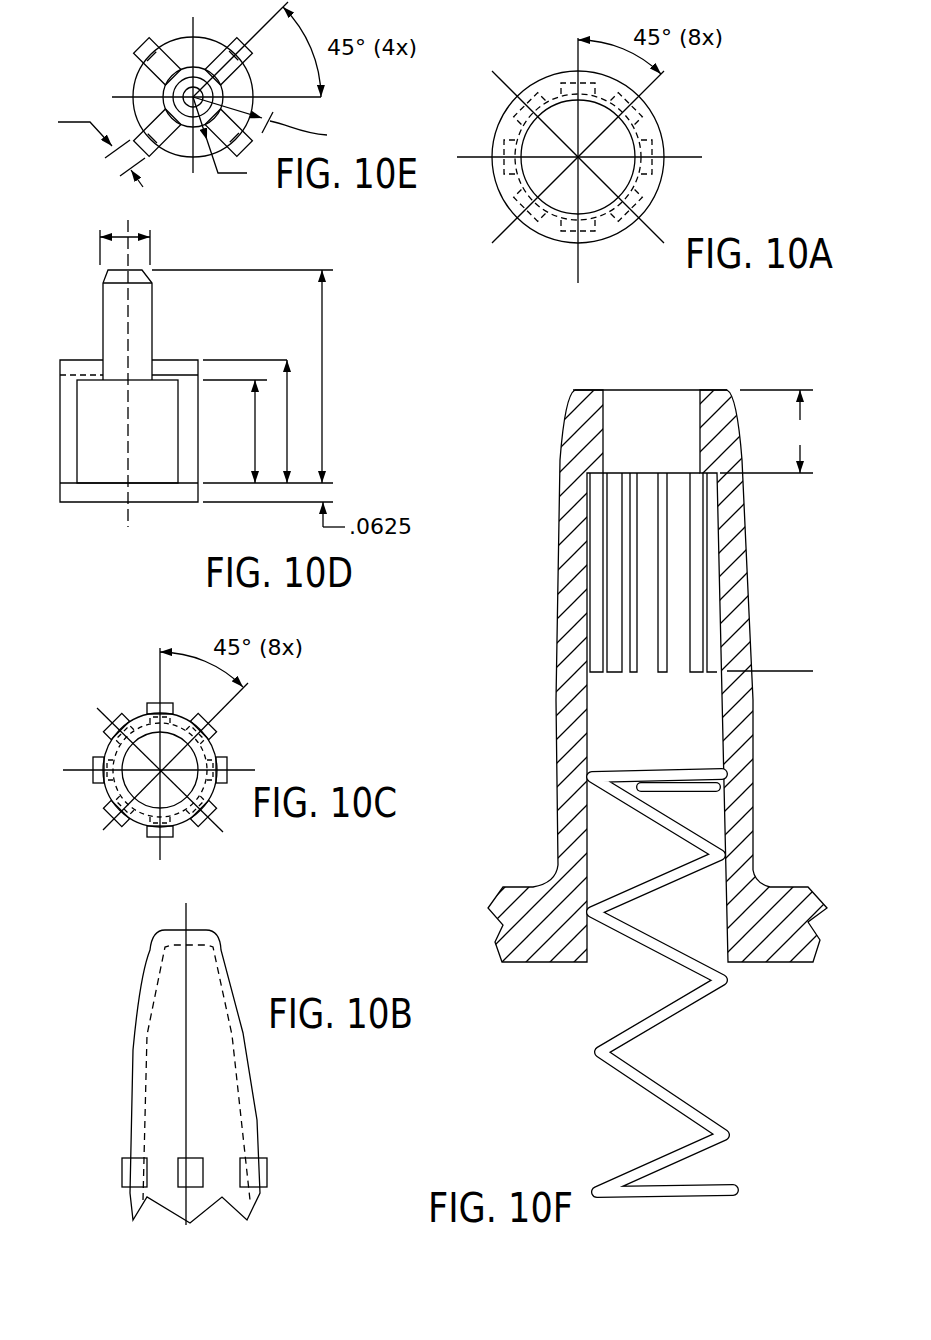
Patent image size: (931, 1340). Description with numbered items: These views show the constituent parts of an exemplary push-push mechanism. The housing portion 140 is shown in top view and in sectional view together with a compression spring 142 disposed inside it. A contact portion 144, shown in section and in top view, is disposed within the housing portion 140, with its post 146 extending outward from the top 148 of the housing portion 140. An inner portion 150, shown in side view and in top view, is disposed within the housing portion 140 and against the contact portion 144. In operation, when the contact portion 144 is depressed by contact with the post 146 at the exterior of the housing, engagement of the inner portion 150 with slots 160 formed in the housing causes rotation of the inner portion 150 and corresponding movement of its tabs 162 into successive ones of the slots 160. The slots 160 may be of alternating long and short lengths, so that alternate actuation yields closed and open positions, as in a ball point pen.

In FIG. 10A, the housing portion 140 is at (577, 245).
In FIG. 10F, the housing portion 140 is at (555, 492).
In FIG. 10F, the compression spring 142 is at (600, 1044).
In FIG. 10E, the contact portion 144 is at (203, 143).
In FIG. 10D, the contact portion 144 is at (163, 360).
In FIG. 10E, the post 146 is at (193, 128).
In FIG. 10D, the post 146 is at (118, 270).
In FIG. 10F, the top 148 is at (707, 390).
In FIG. 10C, the inner portion 150 is at (182, 820).
In FIG. 10B, the inner portion 150 is at (225, 958).
In FIG. 10F, the slots 160 is at (620, 657).
In FIG. 10B, the tabs 162 is at (127, 1163).